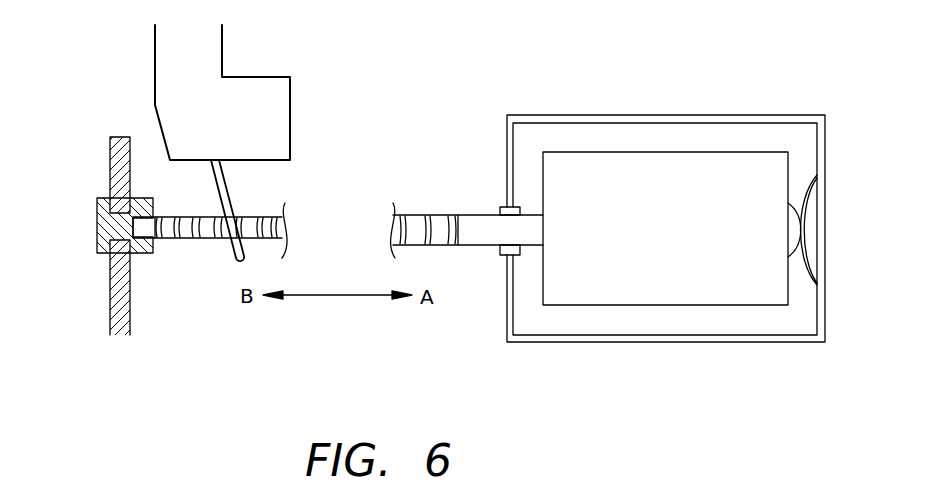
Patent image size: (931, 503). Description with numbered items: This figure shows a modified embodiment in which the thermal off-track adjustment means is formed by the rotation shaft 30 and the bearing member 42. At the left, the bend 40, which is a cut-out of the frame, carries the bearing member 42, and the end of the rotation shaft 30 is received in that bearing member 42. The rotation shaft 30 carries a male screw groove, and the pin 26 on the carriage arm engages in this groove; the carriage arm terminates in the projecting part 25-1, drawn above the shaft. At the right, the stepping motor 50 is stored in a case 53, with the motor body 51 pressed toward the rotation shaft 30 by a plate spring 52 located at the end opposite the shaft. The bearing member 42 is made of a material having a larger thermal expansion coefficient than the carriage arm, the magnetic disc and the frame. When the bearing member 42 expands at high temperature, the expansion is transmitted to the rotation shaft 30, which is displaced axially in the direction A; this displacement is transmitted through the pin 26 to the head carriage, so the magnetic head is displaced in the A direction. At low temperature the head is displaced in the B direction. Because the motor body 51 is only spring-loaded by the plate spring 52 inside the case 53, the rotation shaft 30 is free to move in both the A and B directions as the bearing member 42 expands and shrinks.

The projecting part 25-1 is at (282, 113).
The pin 26 is at (233, 200).
The rotation shaft 30 is at (447, 213).
The bend 40 is at (128, 137).
The bearing member 42 is at (96, 199).
The stepping motor 50 is at (693, 87).
The motor body 51 is at (662, 305).
The plate spring 52 is at (803, 228).
The case 53 is at (747, 337).